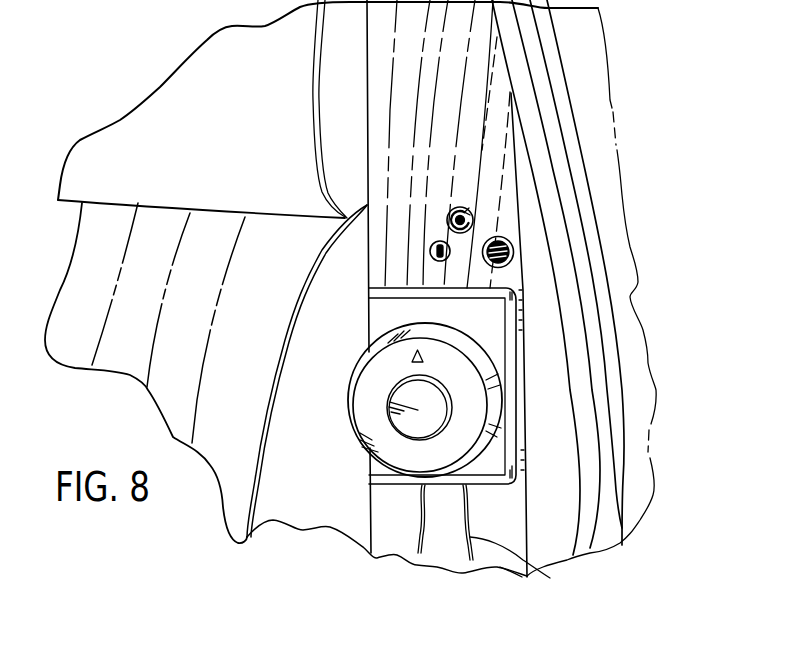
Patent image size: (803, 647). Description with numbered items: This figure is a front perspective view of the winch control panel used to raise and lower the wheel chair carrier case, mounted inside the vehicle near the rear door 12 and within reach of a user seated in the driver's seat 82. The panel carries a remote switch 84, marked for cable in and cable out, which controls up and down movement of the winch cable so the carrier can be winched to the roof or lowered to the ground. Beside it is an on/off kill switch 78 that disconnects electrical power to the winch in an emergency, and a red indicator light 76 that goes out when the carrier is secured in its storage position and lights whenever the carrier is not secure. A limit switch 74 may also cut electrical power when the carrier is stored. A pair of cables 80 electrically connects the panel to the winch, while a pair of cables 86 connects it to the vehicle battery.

The rear door 12 is at (627, 298).
The limit switch 74 is at (430, 251).
The red indicator light 76 is at (512, 263).
The kill switch 78 is at (473, 226).
The cables 80 is at (424, 528).
The driver's seat 82 is at (170, 376).
The remote switch 84 is at (437, 403).
The cables 86 is at (524, 565).